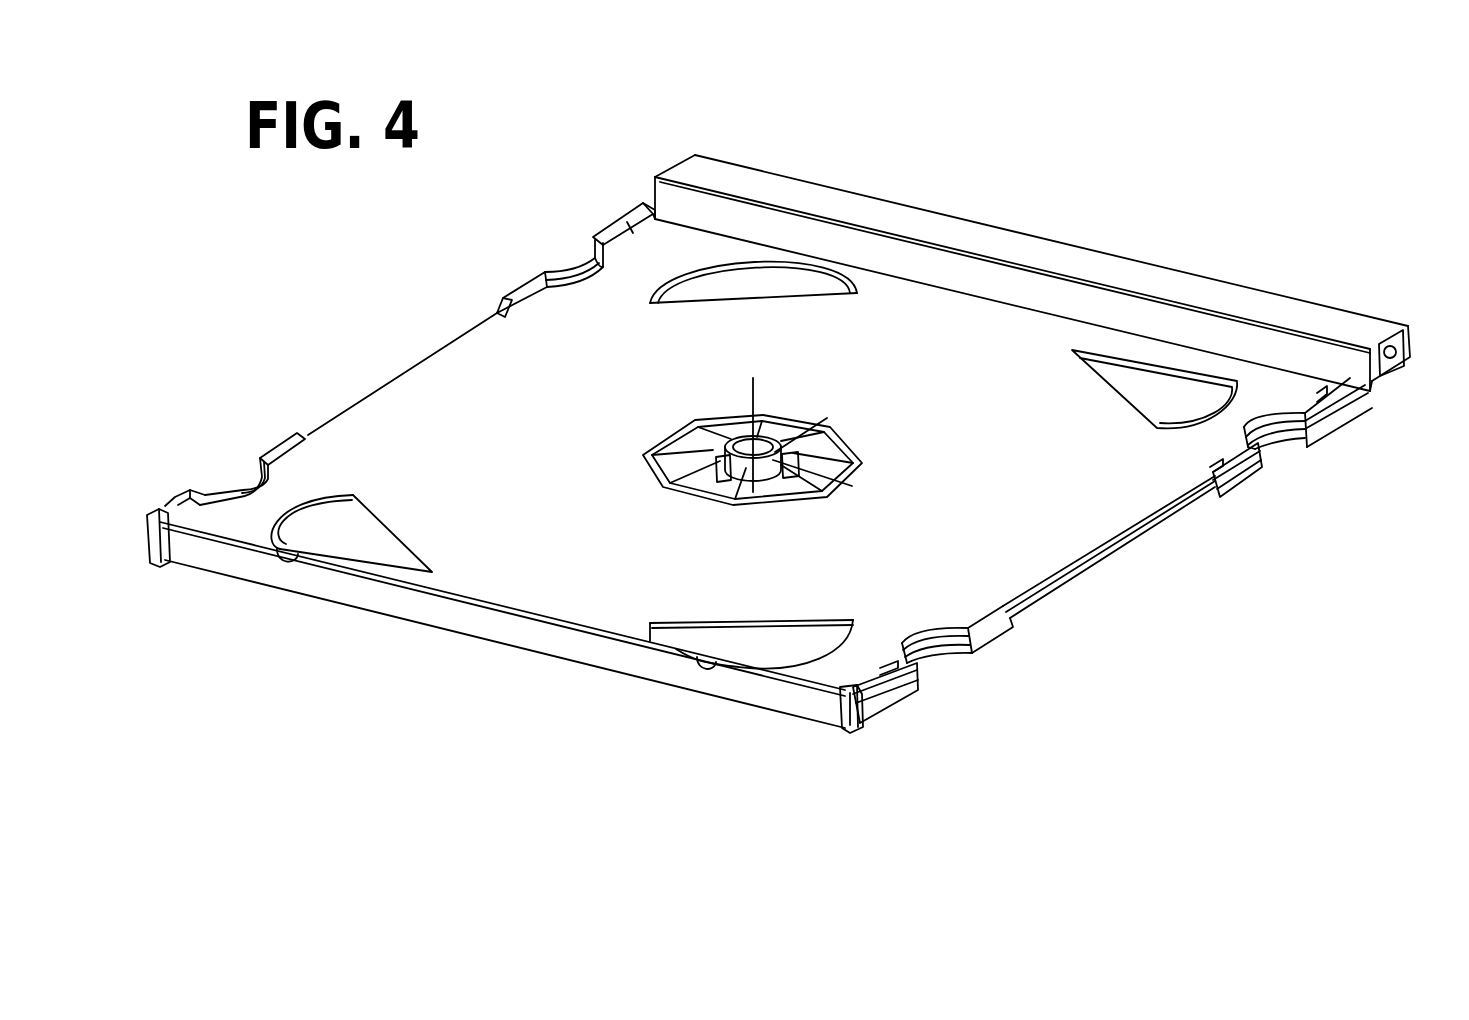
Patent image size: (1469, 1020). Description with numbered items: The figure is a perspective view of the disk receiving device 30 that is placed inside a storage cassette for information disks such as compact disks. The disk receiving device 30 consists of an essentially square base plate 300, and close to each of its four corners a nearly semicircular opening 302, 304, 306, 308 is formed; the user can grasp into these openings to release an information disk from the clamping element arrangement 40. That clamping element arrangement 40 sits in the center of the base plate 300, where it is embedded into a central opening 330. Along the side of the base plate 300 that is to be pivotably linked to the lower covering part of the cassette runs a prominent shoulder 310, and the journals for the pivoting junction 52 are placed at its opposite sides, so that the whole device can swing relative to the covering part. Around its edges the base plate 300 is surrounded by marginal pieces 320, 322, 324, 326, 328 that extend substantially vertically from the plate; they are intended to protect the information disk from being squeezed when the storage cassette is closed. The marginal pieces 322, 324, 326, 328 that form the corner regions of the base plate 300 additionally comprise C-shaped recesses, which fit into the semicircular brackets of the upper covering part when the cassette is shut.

The disk receiving device 30 is at (482, 688).
The clamping element arrangement 40 is at (801, 424).
The pivoting junction 52 is at (1395, 358).
The base plate 300 is at (1047, 540).
The nearly semicircular opening 302 is at (777, 652).
The nearly semicircular opening 304 is at (330, 545).
The nearly semicircular opening 306 is at (742, 287).
The nearly semicircular opening 308 is at (1185, 372).
The prominent shoulder 310 is at (1057, 282).
The marginal piece 320 is at (582, 650).
The marginal piece 322 is at (280, 445).
The marginal piece 324 is at (598, 242).
The marginal piece 326 is at (1327, 424).
The marginal piece 328 is at (892, 709).
The central opening 330 is at (710, 432).